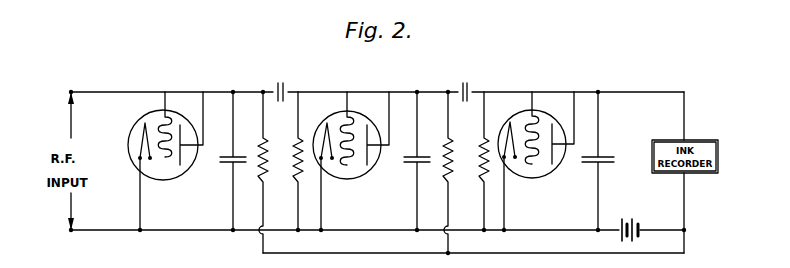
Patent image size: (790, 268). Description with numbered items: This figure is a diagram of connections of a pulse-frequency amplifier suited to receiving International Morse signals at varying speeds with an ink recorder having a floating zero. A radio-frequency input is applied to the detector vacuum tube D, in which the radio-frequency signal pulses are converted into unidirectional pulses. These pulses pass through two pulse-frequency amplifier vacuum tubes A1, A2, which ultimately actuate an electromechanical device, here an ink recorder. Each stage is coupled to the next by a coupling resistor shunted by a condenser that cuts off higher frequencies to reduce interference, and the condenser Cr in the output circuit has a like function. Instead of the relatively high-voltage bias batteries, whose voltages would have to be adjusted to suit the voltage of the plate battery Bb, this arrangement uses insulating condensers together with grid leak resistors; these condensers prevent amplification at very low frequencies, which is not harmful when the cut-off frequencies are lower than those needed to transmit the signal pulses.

The detector vacuum tube D is at (140, 118).
The pulse-frequency amplifier vacuum tube A1 is at (338, 113).
The pulse-frequency amplifier vacuum tube A2 is at (522, 113).
The condenser in the output circuit Cr is at (601, 161).
The plate battery Bb is at (644, 221).